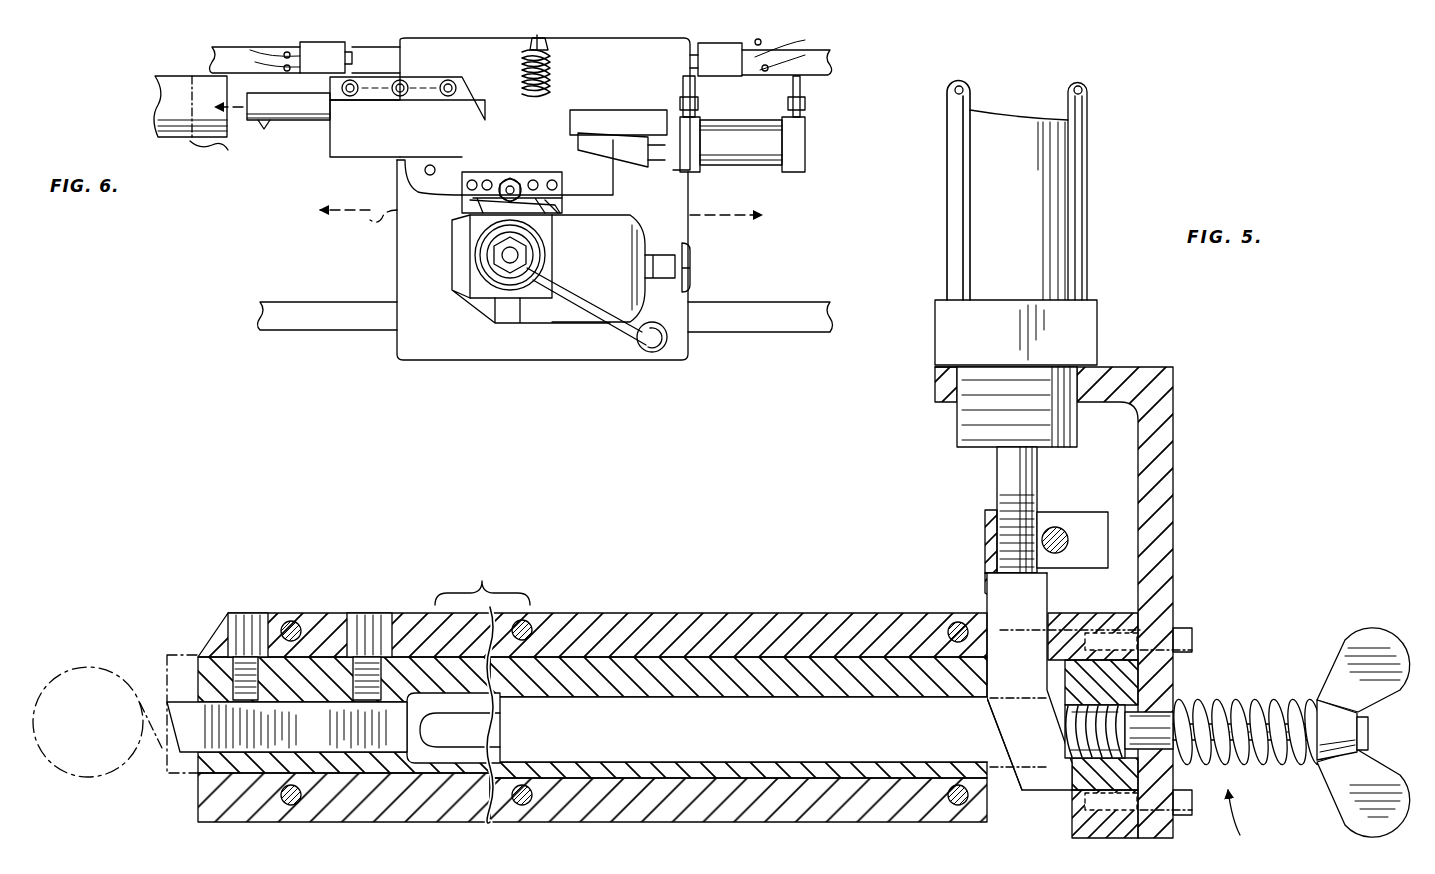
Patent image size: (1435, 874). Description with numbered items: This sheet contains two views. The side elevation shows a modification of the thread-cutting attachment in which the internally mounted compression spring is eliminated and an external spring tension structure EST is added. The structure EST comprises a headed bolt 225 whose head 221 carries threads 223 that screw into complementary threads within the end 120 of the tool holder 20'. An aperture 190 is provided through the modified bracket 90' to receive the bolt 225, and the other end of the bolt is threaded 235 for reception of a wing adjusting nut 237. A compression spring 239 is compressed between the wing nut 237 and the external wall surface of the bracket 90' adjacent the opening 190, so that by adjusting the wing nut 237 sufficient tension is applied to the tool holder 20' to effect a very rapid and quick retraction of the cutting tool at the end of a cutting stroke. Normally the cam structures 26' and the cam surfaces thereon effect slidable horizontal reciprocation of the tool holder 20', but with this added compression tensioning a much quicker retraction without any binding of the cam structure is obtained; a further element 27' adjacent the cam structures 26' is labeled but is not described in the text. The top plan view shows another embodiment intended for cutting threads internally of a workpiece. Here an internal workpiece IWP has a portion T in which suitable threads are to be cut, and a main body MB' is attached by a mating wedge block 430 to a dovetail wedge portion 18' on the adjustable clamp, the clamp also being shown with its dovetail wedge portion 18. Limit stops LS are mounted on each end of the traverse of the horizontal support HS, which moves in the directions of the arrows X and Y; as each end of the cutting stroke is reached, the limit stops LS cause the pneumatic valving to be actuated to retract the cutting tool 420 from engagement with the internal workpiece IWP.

In FIG. 6, the dovetail wedge portion 18 is at (538, 283).
In FIG. 6, the dovetail wedge portion 18' is at (530, 185).
In FIG. 6, the cutting tool 420 is at (300, 108).
In FIG. 6, the mating wedge block 430 is at (555, 205).
In FIG. 5, the modified bracket 90' is at (1087, 602).
In FIG. 5, the end of the tool holder 120 is at (1090, 665).
In FIG. 5, the tool holder 20' is at (592, 717).
In FIG. 5, the cam structures 26' is at (1062, 681).
In FIG. 5, the jaw lower portion 27' is at (1001, 784).
In FIG. 5, the head 221 is at (1090, 770).
In FIG. 5, the threads 223 is at (1093, 712).
In FIG. 5, the aperture 190 is at (1145, 712).
In FIG. 5, the headed bolt 225 is at (1155, 745).
In FIG. 5, the compression spring 239 is at (1270, 760).
In FIG. 5, the wing adjusting nut 237 is at (1378, 693).
In FIG. 5, the threaded end 235 is at (1363, 735).
In FIG. 6, the internal workpiece IWP is at (175, 83).
In FIG. 6, the portion T is at (228, 150).
In FIG. 6, the limit stops LS is at (328, 60).
In FIG. 6, the main body MB' is at (510, 115).
In FIG. 6, the horizontal support HS is at (680, 232).
In FIG. 6, the arrow X is at (352, 234).
In FIG. 6, the arrow Y is at (730, 208).
In FIG. 5, the external spring tension structure EST is at (1249, 824).